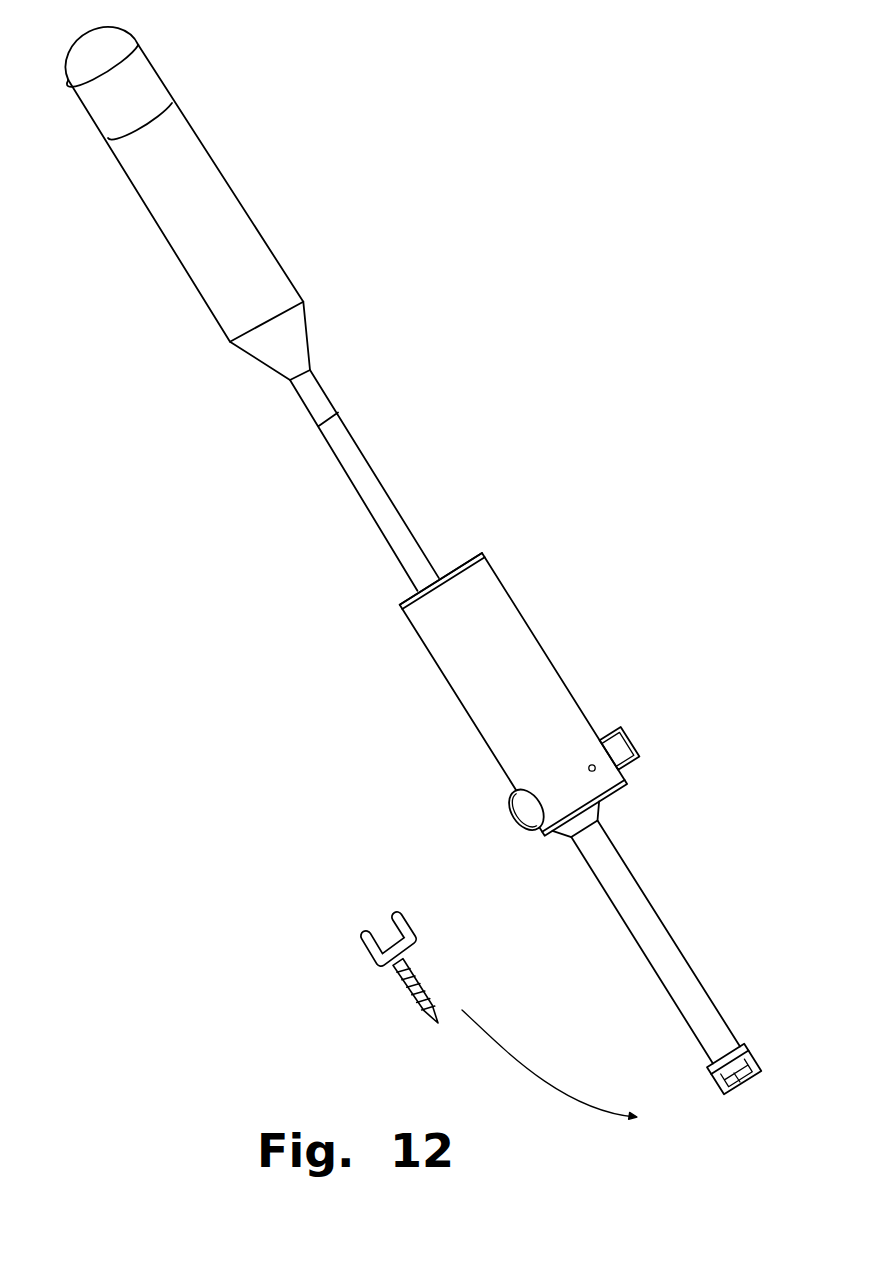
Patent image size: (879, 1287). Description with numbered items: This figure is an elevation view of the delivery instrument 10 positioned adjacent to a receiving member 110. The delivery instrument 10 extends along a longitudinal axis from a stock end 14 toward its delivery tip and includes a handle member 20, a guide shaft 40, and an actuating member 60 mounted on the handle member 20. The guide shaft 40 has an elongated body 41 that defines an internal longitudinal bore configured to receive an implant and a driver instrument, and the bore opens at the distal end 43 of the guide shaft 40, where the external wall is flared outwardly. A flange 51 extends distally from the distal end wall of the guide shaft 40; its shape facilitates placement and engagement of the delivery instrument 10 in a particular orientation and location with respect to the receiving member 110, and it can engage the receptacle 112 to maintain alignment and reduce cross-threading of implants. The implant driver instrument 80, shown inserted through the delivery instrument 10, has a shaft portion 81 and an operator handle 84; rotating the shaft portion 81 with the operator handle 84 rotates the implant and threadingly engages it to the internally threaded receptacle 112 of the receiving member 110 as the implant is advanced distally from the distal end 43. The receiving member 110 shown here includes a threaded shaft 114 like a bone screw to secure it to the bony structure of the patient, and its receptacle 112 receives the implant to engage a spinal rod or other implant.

The delivery instrument 10 is at (529, 824).
The stock end 14 is at (480, 553).
The handle member 20 is at (550, 650).
The guide shaft 40 is at (529, 969).
The elongated body 41 is at (676, 952).
The distal end 43 is at (708, 1072).
The flange 51 is at (722, 1088).
The actuating member 60 is at (626, 722).
The implant driver instrument 80 is at (247, 309).
The shaft portion 81 is at (371, 467).
The operator handle 84 is at (219, 167).
The receiving member 110 is at (488, 981).
The internally threaded receptacle 112 is at (387, 945).
The threaded shaft 114 is at (423, 973).